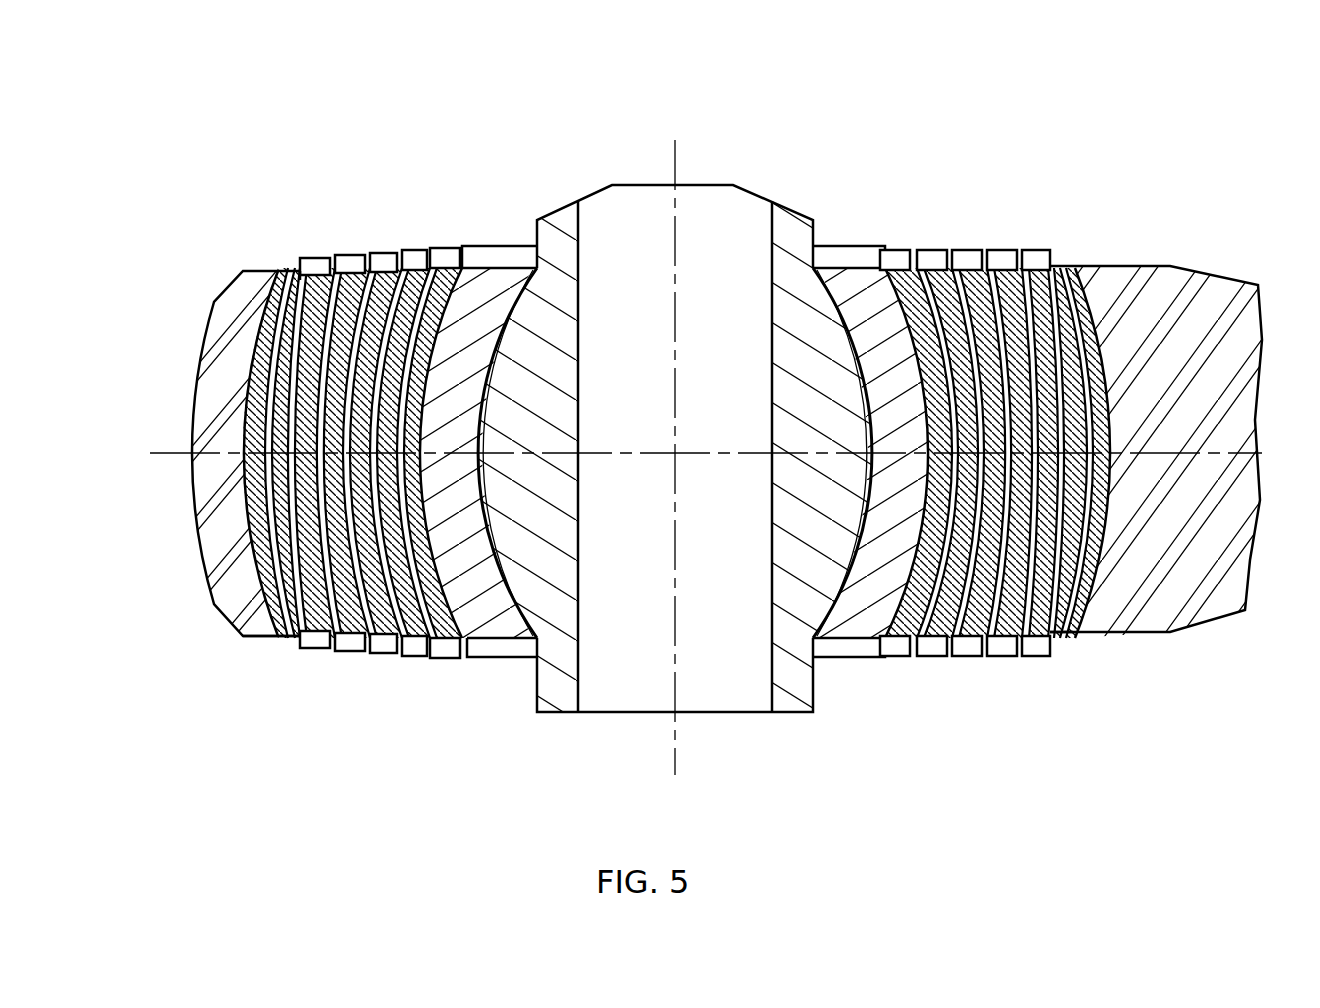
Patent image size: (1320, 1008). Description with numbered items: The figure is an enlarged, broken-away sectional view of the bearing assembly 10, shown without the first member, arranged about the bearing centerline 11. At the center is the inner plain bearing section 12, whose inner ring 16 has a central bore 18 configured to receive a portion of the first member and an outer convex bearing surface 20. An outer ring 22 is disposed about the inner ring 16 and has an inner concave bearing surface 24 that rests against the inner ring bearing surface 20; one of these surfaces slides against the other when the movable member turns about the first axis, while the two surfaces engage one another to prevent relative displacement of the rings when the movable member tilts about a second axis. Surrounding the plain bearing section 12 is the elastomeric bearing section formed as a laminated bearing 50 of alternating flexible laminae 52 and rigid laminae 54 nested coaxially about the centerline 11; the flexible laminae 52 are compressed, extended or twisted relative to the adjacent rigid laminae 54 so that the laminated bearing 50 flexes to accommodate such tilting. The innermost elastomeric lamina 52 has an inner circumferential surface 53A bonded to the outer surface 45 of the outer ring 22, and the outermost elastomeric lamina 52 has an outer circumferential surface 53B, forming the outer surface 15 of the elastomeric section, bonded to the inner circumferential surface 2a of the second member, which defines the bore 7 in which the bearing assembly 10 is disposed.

The bearing assembly 10 is at (415, 135).
The bearing centerline 11 is at (676, 152).
The inner plain bearing section 12 is at (798, 157).
The inner ring 16 is at (559, 205).
The central bore 18 is at (608, 690).
The outer convex bearing surface 20 is at (860, 326).
The outer ring 22 is at (497, 266).
The inner concave bearing surface 24 is at (846, 364).
The outer surface of the outer ring 45 is at (447, 546).
The laminated bearing 50 is at (366, 255).
The flexible laminae 52 is at (905, 262).
The rigid laminae 54 is at (920, 262).
The inner circumferential surface 53A is at (512, 661).
The outer circumferential surface 53B is at (240, 472).
The outer surface 15 is at (244, 530).
The bore 7 is at (1061, 249).
The inner circumferential surface 2a is at (272, 641).